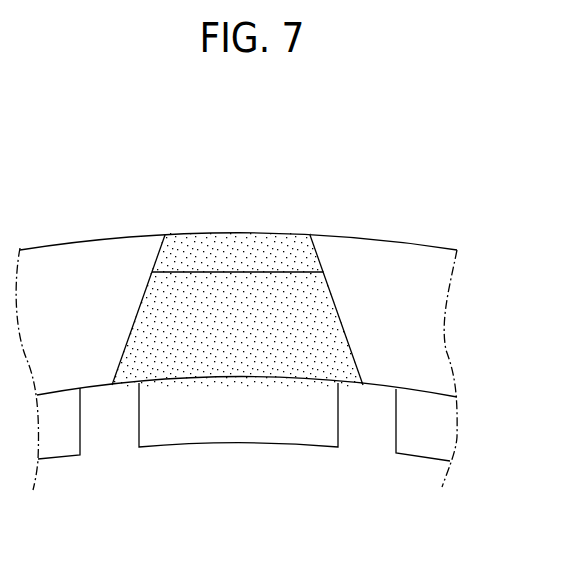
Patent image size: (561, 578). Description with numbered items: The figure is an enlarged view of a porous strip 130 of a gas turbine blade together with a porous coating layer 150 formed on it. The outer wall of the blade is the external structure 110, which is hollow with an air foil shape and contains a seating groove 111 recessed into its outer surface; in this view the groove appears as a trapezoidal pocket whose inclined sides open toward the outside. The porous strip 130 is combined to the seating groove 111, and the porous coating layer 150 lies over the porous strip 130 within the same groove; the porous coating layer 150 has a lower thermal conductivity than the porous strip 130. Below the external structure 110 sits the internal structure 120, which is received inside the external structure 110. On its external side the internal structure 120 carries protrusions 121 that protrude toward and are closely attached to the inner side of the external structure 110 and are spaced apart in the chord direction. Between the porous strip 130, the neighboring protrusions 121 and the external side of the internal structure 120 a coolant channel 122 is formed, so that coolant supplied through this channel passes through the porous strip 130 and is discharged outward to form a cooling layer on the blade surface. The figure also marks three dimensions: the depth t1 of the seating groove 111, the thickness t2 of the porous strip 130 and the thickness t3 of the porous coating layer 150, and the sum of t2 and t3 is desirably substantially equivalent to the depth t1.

The external structure 110 is at (393, 266).
The seating groove 111 is at (328, 306).
The internal structure 120 is at (281, 462).
The protrusion 121 is at (100, 420).
The coolant channel 122 is at (230, 422).
The porous strip 130 is at (290, 298).
The porous coating layer 150 is at (256, 250).
The depth of the seating groove t1 is at (415, 246).
The thickness of the porous strip t2 is at (181, 384).
The thickness of the porous coating layer t3 is at (181, 236).